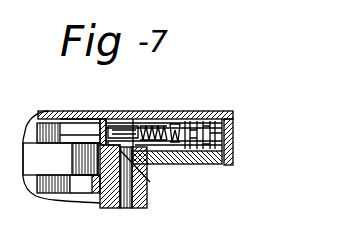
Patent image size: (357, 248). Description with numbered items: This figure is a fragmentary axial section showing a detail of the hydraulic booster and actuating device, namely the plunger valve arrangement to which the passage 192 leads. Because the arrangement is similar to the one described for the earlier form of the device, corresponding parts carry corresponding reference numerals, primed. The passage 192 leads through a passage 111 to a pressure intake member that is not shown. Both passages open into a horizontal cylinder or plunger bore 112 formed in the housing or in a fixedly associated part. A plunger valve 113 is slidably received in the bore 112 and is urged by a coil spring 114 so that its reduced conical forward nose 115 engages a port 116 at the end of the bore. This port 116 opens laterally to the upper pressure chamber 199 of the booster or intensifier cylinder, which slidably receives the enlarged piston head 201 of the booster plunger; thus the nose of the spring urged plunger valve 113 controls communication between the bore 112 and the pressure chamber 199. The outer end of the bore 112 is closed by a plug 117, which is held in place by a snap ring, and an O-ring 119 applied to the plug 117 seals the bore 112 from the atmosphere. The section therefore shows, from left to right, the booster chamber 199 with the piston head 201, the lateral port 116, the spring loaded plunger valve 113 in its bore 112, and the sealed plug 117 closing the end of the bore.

The passage 111 is at (130, 207).
The plunger valve bore 112 is at (141, 182).
The plunger valve 113 is at (151, 168).
The coil spring 114 is at (184, 165).
The conical forward nose 115 is at (113, 118).
The port 116 is at (97, 118).
The plug 117 is at (211, 131).
The O-ring 119 is at (201, 161).
The passage 192 is at (129, 118).
The upper pressure chamber 199 is at (72, 116).
The enlarged piston head 201 is at (52, 168).